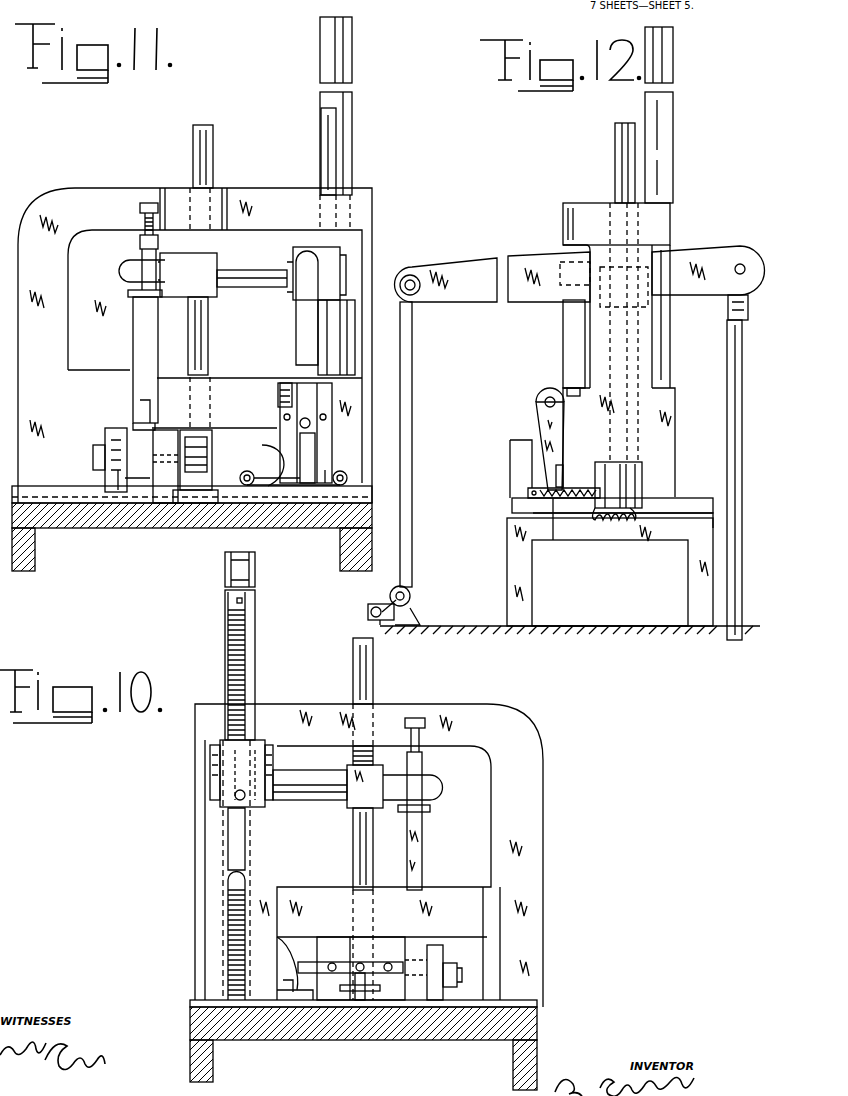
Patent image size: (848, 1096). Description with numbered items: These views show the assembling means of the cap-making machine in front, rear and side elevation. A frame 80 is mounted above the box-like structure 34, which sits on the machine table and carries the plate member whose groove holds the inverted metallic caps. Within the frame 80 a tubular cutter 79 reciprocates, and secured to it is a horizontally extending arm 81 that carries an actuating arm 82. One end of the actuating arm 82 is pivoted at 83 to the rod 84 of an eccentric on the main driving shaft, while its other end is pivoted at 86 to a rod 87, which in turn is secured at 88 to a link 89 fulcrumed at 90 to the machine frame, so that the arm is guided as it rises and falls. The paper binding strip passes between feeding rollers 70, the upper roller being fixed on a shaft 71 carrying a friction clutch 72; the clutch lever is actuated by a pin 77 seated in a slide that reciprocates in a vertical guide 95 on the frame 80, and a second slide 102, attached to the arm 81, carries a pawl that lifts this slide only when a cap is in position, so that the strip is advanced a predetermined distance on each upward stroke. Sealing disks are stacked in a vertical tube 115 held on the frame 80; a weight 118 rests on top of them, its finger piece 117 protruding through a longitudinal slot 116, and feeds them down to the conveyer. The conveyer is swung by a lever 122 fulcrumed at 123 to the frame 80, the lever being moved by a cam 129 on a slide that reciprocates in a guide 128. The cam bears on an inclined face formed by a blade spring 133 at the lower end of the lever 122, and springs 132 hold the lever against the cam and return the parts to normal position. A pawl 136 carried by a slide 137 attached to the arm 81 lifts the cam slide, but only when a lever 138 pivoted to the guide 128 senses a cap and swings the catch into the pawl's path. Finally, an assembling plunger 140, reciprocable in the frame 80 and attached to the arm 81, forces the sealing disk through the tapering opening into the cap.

In FIG. 11, the box-like structure 34 is at (86, 522).
In FIG. 12, the box-like structure 34 is at (520, 575).
In FIG. 11, the feeding rollers 70 is at (178, 470).
In FIG. 10, the feeding rollers 70 is at (358, 1002).
In FIG. 11, the shaft 71 is at (120, 492).
In FIG. 11, the friction clutch 72 is at (105, 445).
In FIG. 10, the friction clutch 72 is at (445, 965).
In FIG. 11, the pin 77 is at (165, 466).
In FIG. 10, the pin 77 is at (428, 950).
In FIG. 11, the tubular cutter 79 is at (208, 356).
In FIG. 10, the tubular cutter 79 is at (353, 856).
In FIG. 11, the frame 80 is at (255, 198).
In FIG. 12, the frame 80 is at (582, 205).
In FIG. 10, the frame 80 is at (305, 714).
In FIG. 11, the horizontally extending arm 81 is at (255, 290).
In FIG. 10, the horizontally extending arm 81 is at (305, 800).
In FIG. 11, the actuating arm 82 is at (292, 300).
In FIG. 12, the actuating arm 82 is at (474, 265).
In FIG. 10, the actuating arm 82 is at (210, 756).
In FIG. 12, the pivot 83 is at (740, 263).
In FIG. 12, the rod 84 is at (730, 421).
In FIG. 12, the pivot 86 is at (411, 278).
In FIG. 12, the rod 87 is at (412, 428).
In FIG. 12, the pivot 88 is at (410, 596).
In FIG. 12, the link 89 is at (395, 597).
In FIG. 12, the fulcrum 90 is at (368, 610).
In FIG. 11, the vertical guide 95 is at (130, 368).
In FIG. 10, the vertical guide 95 is at (423, 871).
In FIG. 11, the second slide 102 is at (145, 285).
In FIG. 11, the vertical tube 115 is at (352, 141).
In FIG. 12, the vertical tube 115 is at (660, 160).
In FIG. 10, the vertical tube 115 is at (256, 573).
In FIG. 10, the longitudinal slot 116 is at (237, 572).
In FIG. 10, the finger piece 117 is at (243, 601).
In FIG. 10, the weight 118 is at (233, 609).
In FIG. 11, the lever 122 is at (310, 424).
In FIG. 12, the lever 122 is at (537, 423).
In FIG. 11, the fulcrum 123 is at (276, 392).
In FIG. 12, the fulcrum 123 is at (545, 400).
In FIG. 11, the guide 128 is at (325, 485).
In FIG. 12, the cam 129 is at (545, 474).
In FIG. 11, the springs 132 is at (248, 470).
In FIG. 12, the springs 132 is at (560, 530).
In FIG. 11, the blade spring 133 is at (318, 455).
In FIG. 11, the pawl 136 is at (355, 375).
In FIG. 11, the slide 137 is at (297, 350).
In FIG. 11, the lever 138 is at (262, 445).
In FIG. 10, the lever 138 is at (295, 955).
In FIG. 11, the assembling plunger 140 is at (330, 173).
In FIG. 12, the assembling plunger 140 is at (617, 148).